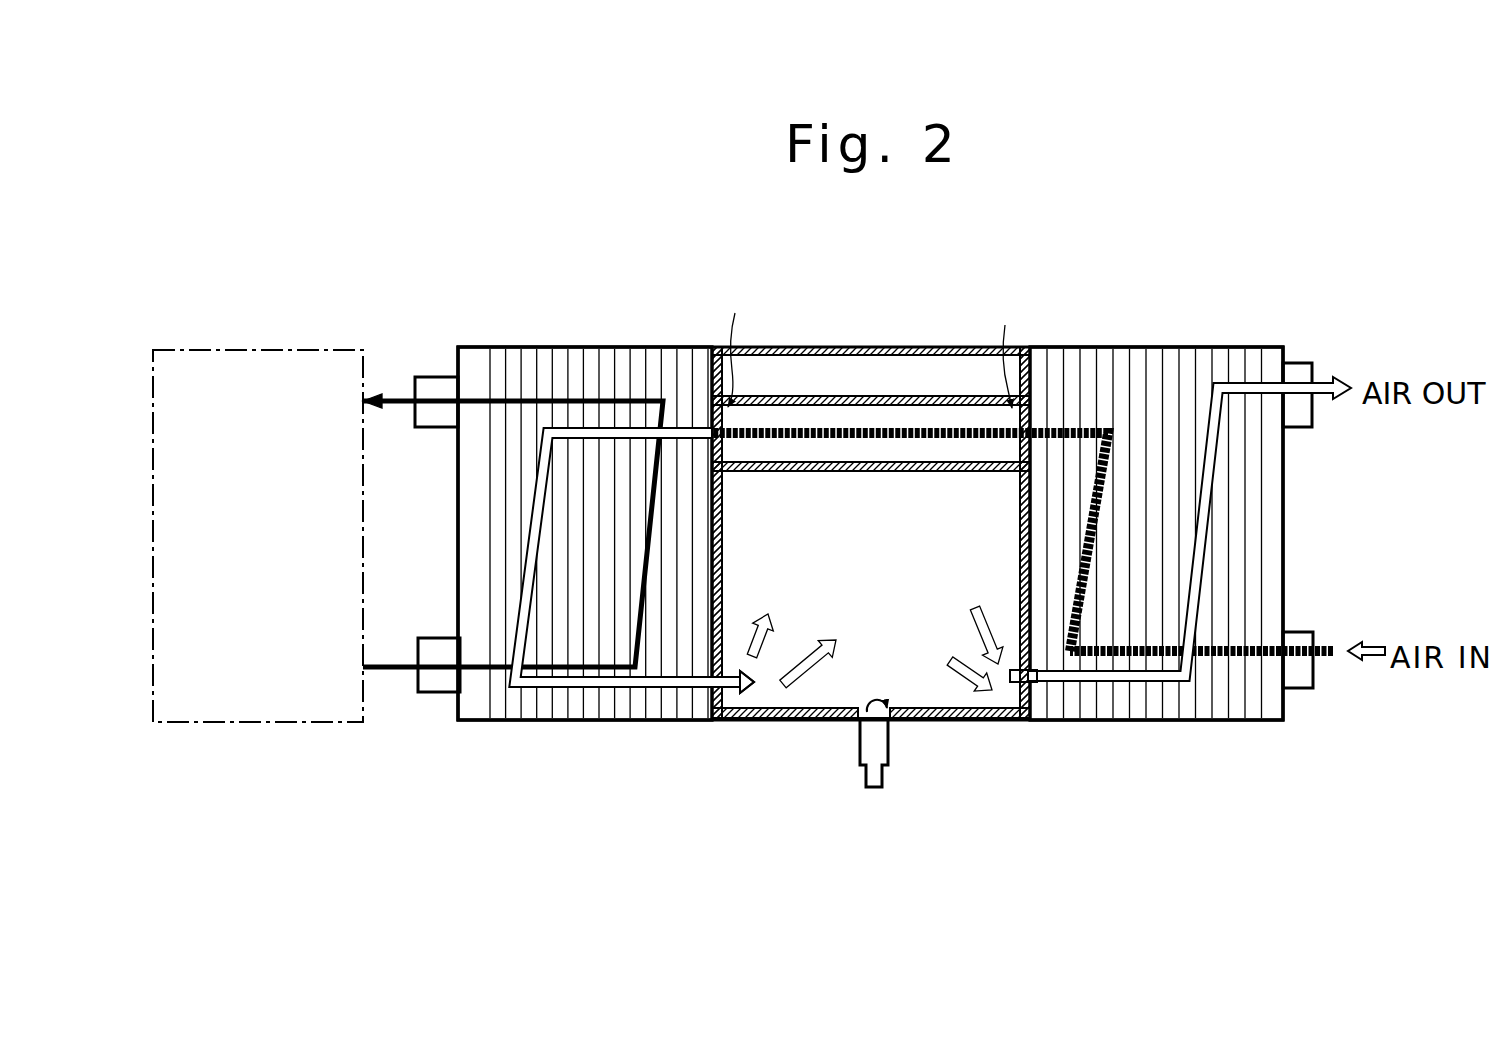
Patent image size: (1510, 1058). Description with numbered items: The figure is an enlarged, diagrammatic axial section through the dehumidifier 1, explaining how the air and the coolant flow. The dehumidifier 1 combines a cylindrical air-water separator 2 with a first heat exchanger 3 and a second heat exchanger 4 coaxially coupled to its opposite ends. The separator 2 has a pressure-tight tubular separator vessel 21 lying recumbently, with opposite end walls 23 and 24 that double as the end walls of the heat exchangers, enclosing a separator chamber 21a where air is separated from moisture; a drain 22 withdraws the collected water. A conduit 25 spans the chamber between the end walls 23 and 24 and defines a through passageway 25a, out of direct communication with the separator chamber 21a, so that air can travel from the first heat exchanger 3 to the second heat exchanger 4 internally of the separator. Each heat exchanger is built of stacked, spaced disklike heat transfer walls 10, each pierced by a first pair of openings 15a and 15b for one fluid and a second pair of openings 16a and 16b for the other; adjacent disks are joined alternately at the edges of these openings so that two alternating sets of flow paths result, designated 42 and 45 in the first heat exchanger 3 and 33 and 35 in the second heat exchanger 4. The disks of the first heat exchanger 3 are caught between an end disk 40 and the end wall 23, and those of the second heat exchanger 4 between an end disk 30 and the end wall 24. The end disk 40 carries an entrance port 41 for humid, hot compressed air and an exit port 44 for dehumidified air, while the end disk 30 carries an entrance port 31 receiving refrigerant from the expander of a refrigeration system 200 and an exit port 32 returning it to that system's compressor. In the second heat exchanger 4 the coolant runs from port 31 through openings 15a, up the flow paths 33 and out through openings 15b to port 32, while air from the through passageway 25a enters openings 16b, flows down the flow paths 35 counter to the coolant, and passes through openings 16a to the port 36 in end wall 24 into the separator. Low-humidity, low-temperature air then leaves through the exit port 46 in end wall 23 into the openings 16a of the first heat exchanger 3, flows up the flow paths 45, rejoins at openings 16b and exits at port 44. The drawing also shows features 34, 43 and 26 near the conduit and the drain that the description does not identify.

The dehumidifier 1 is at (681, 284).
The air-water separator 2 is at (890, 340).
The first heat exchanger 3 is at (1173, 328).
The second heat exchanger 4 is at (567, 333).
The heat transfer walls 10 is at (633, 347).
The first opening 15a is at (1220, 720).
The first opening 15b is at (1083, 428).
The second opening 16a is at (1097, 720).
The second opening 16b is at (1260, 368).
The separator vessel 21 is at (808, 720).
The separator chamber 21a is at (912, 594).
The drain 22 is at (860, 745).
The end wall 23 is at (1012, 503).
The end wall 24 is at (725, 560).
The conduit 25 is at (827, 396).
The through passageway 25a is at (827, 464).
The drain opening 26 is at (897, 710).
The end disk 30 is at (452, 549).
The entrance port 31 is at (447, 700).
The exit port 32 is at (438, 377).
The flow paths 33 is at (618, 718).
The left opening 34 is at (737, 340).
The flow paths 35 is at (503, 722).
The port 36 is at (710, 693).
The end disk 40 is at (1287, 585).
The entrance port 41 is at (1303, 692).
The flow paths 42 is at (1083, 540).
The right opening 43 is at (1004, 349).
The exit port 44 is at (1313, 375).
The flow paths 45 is at (1217, 482).
The exit port 46 is at (1003, 718).
The refrigeration system 200 is at (290, 561).